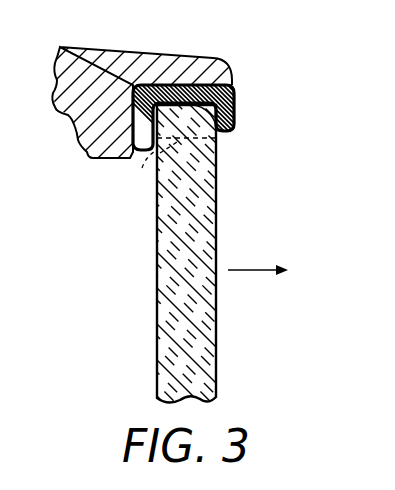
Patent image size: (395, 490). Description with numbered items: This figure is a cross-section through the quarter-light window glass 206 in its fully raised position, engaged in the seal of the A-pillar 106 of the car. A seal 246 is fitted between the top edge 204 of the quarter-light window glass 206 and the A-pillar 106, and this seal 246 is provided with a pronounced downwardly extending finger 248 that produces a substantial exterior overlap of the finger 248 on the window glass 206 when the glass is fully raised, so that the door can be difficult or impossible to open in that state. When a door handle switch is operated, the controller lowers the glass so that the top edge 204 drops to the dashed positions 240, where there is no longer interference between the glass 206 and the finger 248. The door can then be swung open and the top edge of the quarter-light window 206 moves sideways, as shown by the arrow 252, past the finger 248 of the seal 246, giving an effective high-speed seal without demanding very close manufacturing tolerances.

The A-pillar 106 is at (184, 62).
The seal 246 is at (235, 98).
The finger 248 is at (233, 131).
The quarter-light window glass 206 is at (208, 236).
The top edge 204 is at (217, 145).
The dashed positions 240 is at (142, 168).
The arrow 252 is at (255, 272).